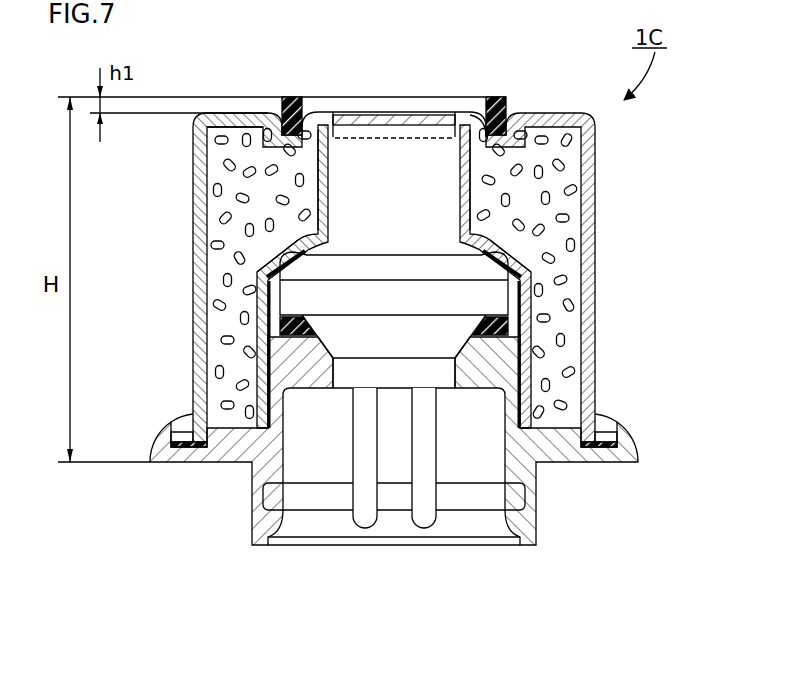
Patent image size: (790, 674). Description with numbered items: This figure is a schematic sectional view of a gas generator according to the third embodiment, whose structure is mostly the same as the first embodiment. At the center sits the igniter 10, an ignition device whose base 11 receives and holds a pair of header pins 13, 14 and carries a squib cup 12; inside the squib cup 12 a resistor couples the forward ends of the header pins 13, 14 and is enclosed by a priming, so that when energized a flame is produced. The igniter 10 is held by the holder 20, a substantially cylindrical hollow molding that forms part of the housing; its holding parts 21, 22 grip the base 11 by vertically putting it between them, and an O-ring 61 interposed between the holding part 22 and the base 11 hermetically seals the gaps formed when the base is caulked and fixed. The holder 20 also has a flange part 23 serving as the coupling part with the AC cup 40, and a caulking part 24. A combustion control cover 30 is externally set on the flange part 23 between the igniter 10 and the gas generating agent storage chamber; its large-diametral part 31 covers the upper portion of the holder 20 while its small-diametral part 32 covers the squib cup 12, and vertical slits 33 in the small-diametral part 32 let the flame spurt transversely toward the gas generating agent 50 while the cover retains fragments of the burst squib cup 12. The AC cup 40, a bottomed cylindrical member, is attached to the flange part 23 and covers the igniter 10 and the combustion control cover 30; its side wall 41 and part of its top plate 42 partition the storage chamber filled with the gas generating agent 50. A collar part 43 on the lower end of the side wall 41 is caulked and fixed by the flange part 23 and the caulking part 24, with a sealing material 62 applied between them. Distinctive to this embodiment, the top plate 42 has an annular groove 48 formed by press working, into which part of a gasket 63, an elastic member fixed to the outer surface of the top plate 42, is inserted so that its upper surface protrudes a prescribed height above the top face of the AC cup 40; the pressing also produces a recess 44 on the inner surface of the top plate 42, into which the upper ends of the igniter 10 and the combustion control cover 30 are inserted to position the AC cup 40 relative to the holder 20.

The igniter 10 is at (346, 396).
The base part 11 is at (475, 292).
The squib cup 12 is at (416, 158).
The header pin 13 is at (365, 514).
The header pin 14 is at (425, 514).
The holder 20 is at (544, 478).
The holding part 21 is at (305, 365).
The holding part 22 is at (268, 258).
The flange part 23 is at (207, 458).
The caulking part 24 is at (185, 425).
The combustion control cover 30 is at (517, 246).
The large-diametral part 31 is at (532, 356).
The small-diametral part 32 is at (472, 223).
The slit 33 is at (465, 180).
The AC cup 40 is at (188, 213).
The side wall 41 is at (197, 167).
The top plate 42 is at (218, 104).
The collar part 43 is at (604, 428).
The recess 44 is at (327, 127).
The groove part 48 is at (506, 130).
The gas generating agent 50 is at (253, 128).
The O-ring 61 is at (500, 321).
The sealing material 62 is at (607, 450).
The gasket 63 is at (496, 100).